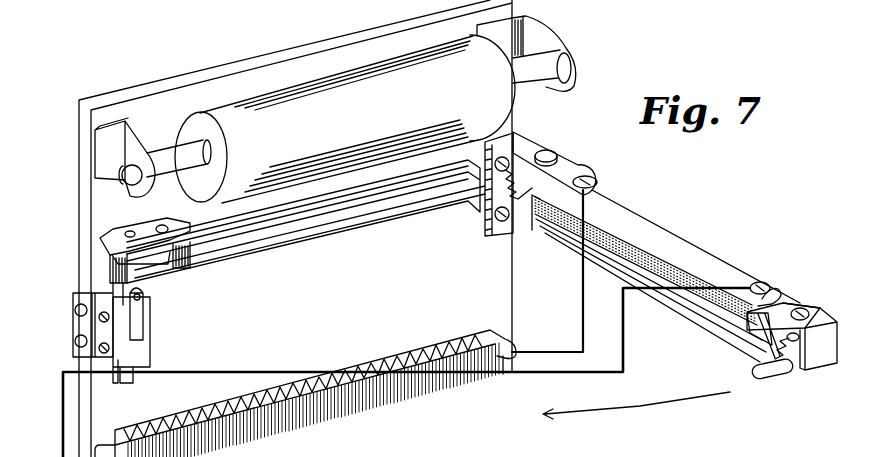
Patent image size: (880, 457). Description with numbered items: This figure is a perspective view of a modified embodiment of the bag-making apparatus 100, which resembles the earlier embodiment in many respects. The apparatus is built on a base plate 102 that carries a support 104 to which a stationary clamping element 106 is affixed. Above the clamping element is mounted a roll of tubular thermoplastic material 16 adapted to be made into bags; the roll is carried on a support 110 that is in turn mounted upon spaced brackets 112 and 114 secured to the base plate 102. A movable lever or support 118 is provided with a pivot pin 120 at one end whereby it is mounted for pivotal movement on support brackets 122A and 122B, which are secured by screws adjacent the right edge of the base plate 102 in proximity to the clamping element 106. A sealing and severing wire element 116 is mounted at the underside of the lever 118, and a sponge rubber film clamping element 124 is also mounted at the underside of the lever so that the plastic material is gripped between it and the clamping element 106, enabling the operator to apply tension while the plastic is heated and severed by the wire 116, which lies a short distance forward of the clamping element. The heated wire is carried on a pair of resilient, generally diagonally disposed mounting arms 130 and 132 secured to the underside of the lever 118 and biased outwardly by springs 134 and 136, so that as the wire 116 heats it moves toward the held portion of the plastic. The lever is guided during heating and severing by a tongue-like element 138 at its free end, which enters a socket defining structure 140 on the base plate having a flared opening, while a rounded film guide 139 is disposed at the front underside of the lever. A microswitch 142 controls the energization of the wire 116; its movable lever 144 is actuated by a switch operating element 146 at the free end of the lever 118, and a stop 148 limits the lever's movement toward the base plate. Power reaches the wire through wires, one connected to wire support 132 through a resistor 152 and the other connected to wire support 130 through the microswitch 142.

The apparatus 100 is at (147, 37).
The base plate 102 is at (177, 78).
The roll of tubular thermoplastic material 16 is at (333, 130).
The support 110 is at (161, 157).
The bracket 112 is at (103, 153).
The bracket 114 is at (542, 31).
The support 104 is at (352, 225).
The clamping element 106 is at (313, 236).
The socket defining structure 140 is at (100, 228).
The stop 148 is at (110, 290).
The microswitch 142 is at (143, 347).
The movable lever 144 is at (142, 322).
The support bracket 122A is at (522, 140).
The support bracket 122B is at (497, 231).
The pivot pin 120 is at (548, 150).
The mounting arm 132 is at (567, 180).
The spring 136 is at (530, 190).
The movable lever 118 is at (698, 234).
The sponge rubber film clamping element 124 is at (613, 236).
The sealing and severing wire element 116 is at (695, 312).
The rounded film guide 139 is at (708, 325).
The mounting arm 130 is at (757, 303).
The tongue-like element 138 is at (772, 315).
The spring 134 is at (790, 368).
The switch operating element 146 is at (760, 373).
The resistor 152 is at (276, 428).